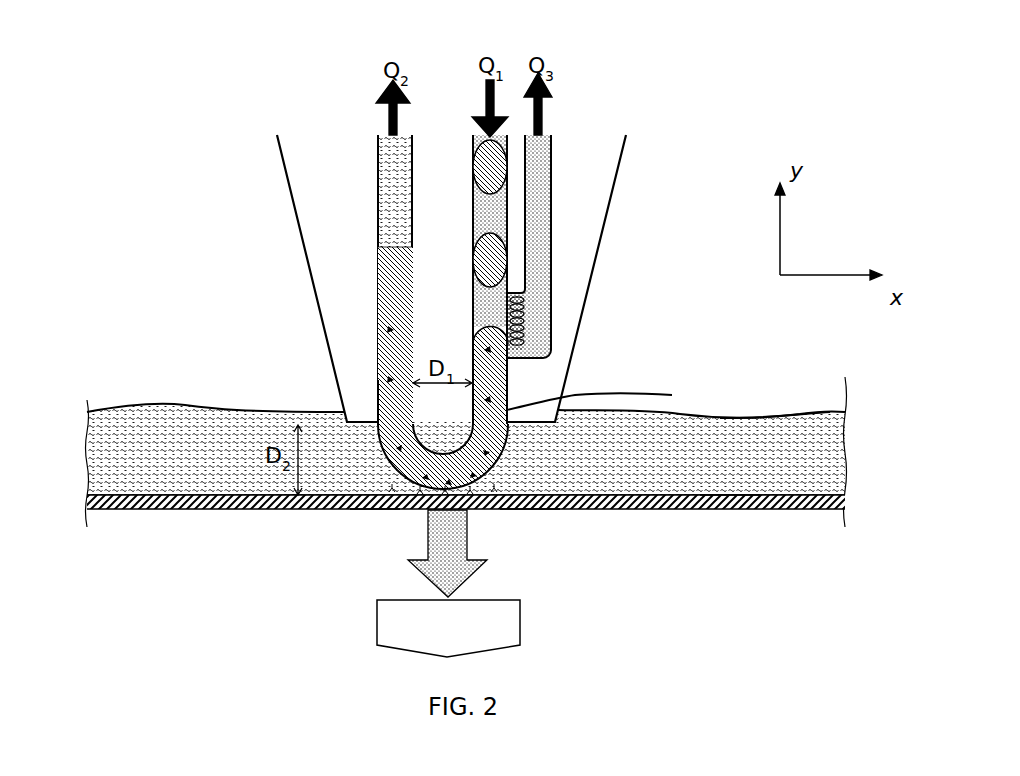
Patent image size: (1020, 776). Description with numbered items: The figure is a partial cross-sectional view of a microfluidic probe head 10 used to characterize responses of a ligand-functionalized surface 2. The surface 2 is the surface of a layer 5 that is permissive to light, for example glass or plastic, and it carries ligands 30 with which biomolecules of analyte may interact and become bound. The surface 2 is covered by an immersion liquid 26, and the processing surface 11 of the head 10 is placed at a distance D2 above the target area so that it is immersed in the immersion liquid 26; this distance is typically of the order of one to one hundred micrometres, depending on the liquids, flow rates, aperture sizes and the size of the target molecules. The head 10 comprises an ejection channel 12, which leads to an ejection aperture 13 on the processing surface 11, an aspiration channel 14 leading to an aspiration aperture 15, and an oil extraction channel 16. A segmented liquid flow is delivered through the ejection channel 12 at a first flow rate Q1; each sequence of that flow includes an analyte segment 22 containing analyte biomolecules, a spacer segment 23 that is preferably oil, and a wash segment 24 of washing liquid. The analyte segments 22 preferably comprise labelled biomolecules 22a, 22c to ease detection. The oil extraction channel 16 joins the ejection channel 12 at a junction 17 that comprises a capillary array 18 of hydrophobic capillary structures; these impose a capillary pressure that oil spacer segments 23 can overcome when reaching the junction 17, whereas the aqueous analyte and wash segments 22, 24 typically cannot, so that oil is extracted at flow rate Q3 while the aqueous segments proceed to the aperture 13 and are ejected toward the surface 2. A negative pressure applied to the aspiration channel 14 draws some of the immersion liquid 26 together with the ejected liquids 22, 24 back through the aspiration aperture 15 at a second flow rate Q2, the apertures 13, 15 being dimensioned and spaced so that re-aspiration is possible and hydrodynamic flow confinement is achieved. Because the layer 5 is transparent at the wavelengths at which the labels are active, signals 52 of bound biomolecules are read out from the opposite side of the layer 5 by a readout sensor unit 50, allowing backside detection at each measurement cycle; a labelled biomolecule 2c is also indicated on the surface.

The ligand-functionalized surface 2 is at (592, 490).
The labelled biomolecule 2c is at (733, 500).
The layer 5 is at (817, 509).
The microfluidic probe head 10 is at (283, 250).
The processing surface 11 is at (363, 425).
The ejection channel 12 is at (515, 373).
The ejection aperture 13 is at (605, 397).
The aspiration channel 14 is at (376, 167).
The aspiration aperture 15 is at (380, 393).
The oil extraction channel 16 is at (552, 172).
The junction 17 is at (525, 291).
The capillary array 18 is at (525, 308).
The analyte segment 22 is at (513, 386).
The labelled biomolecule 22a is at (530, 510).
The labelled biomolecule 22c is at (765, 452).
The spacer segment 23 is at (473, 222).
The wash segment 24 is at (473, 172).
The immersion liquid 26 is at (377, 201).
The ligands 30 is at (376, 511).
The readout sensor unit 50 is at (377, 628).
The signals 52 is at (469, 540).